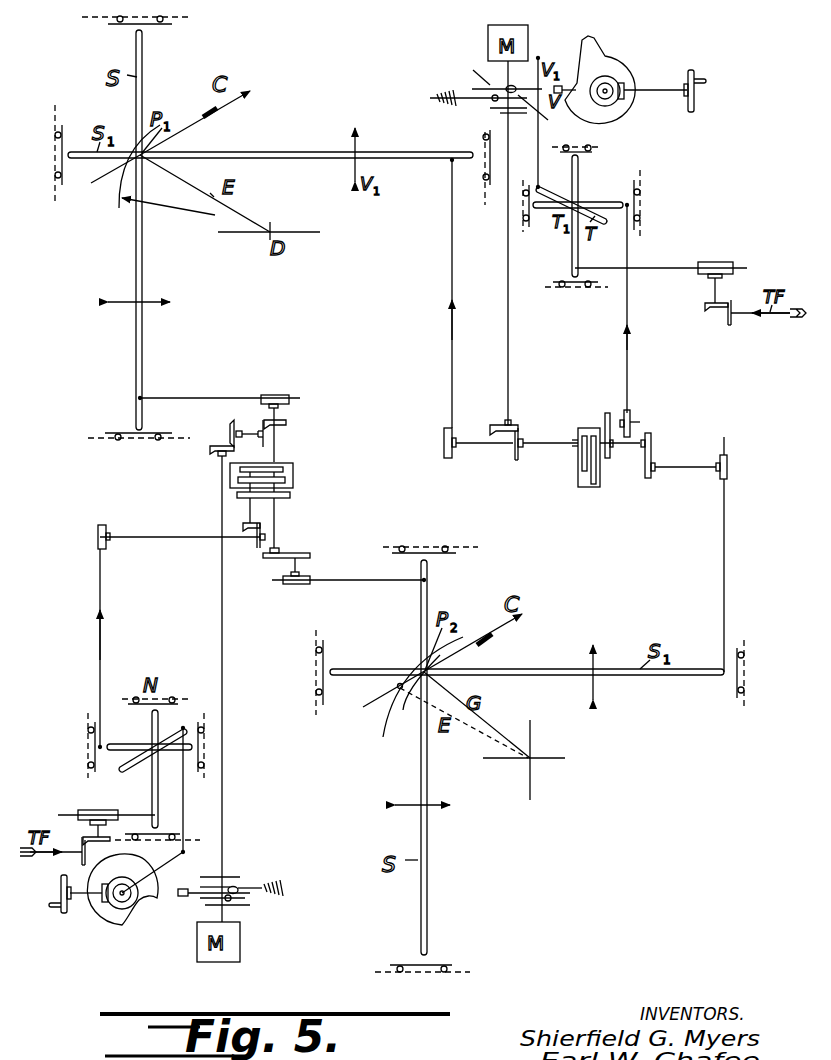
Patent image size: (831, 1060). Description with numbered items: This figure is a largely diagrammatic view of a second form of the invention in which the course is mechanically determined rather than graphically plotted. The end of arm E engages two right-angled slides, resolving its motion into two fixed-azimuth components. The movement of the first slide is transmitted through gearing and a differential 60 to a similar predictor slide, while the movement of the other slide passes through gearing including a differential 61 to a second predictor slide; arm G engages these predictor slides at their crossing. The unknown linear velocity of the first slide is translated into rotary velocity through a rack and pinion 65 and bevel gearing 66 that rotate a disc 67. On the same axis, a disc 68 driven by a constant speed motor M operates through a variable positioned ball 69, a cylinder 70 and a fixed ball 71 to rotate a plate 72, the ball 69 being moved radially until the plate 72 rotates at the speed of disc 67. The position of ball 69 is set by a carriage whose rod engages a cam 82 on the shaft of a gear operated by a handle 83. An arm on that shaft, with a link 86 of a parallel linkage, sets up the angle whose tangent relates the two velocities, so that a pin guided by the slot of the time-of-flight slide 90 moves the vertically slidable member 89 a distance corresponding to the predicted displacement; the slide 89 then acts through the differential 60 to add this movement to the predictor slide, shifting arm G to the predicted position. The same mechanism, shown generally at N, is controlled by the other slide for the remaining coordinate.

The differential 60 is at (590, 487).
The differential 61 is at (293, 473).
The rack and pinion 65 is at (460, 452).
The bevel gearing 66 is at (517, 433).
The disc 67 is at (507, 116).
The disc 68 is at (466, 71).
The variable positioned ball 69 is at (522, 77).
The cylinder 70 is at (544, 116).
The fixed ball 71 is at (488, 103).
The plate 72 is at (498, 112).
The cam 82 is at (596, 66).
The handle 83 is at (674, 91).
The link 86 is at (543, 170).
The vertically slidable member 89 is at (630, 310).
The time-of-flight slide 90 is at (572, 250).